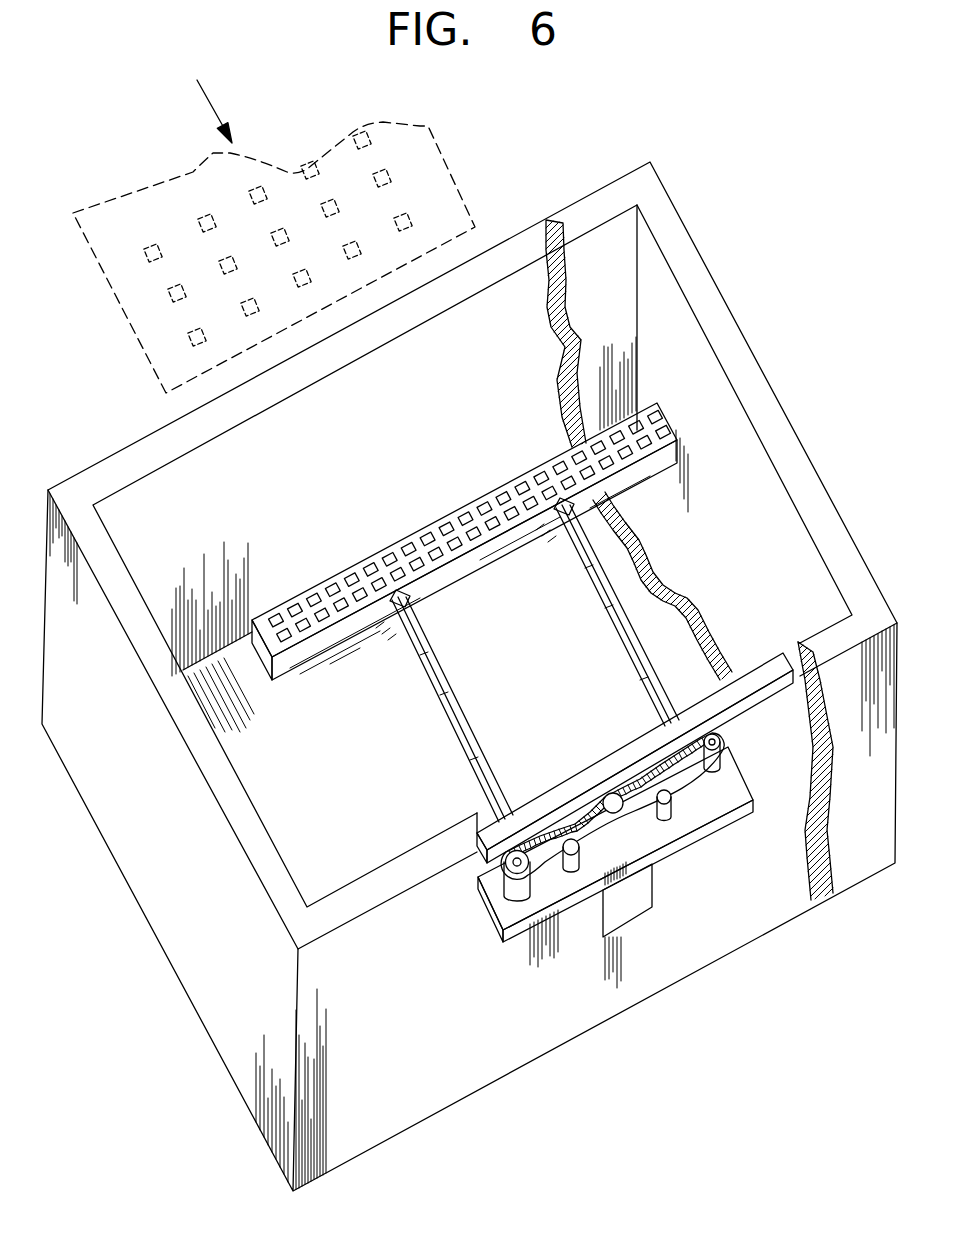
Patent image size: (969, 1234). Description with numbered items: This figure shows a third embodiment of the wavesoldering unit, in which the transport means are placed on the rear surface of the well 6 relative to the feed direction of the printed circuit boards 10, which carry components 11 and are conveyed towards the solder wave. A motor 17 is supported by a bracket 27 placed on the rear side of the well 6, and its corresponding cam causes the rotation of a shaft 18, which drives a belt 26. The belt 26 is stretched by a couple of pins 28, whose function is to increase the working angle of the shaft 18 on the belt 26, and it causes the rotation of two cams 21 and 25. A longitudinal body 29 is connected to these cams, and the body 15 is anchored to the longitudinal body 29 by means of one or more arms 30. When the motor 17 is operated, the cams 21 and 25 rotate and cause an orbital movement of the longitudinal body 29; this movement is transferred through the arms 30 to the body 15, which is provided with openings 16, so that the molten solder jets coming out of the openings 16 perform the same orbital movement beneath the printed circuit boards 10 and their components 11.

The well 6 is at (735, 316).
The printed circuit boards 10 is at (153, 371).
The components 11 is at (170, 291).
The body 15 is at (473, 497).
The openings 16 is at (369, 563).
The motor 17 is at (645, 893).
The shaft 18 is at (621, 786).
The cam 21 is at (722, 738).
The cam 25 is at (518, 888).
The belt 26 is at (503, 940).
The bracket 27 is at (681, 838).
The pins 28 is at (670, 803).
The longitudinal body 29 is at (497, 832).
The arms 30 is at (458, 690).